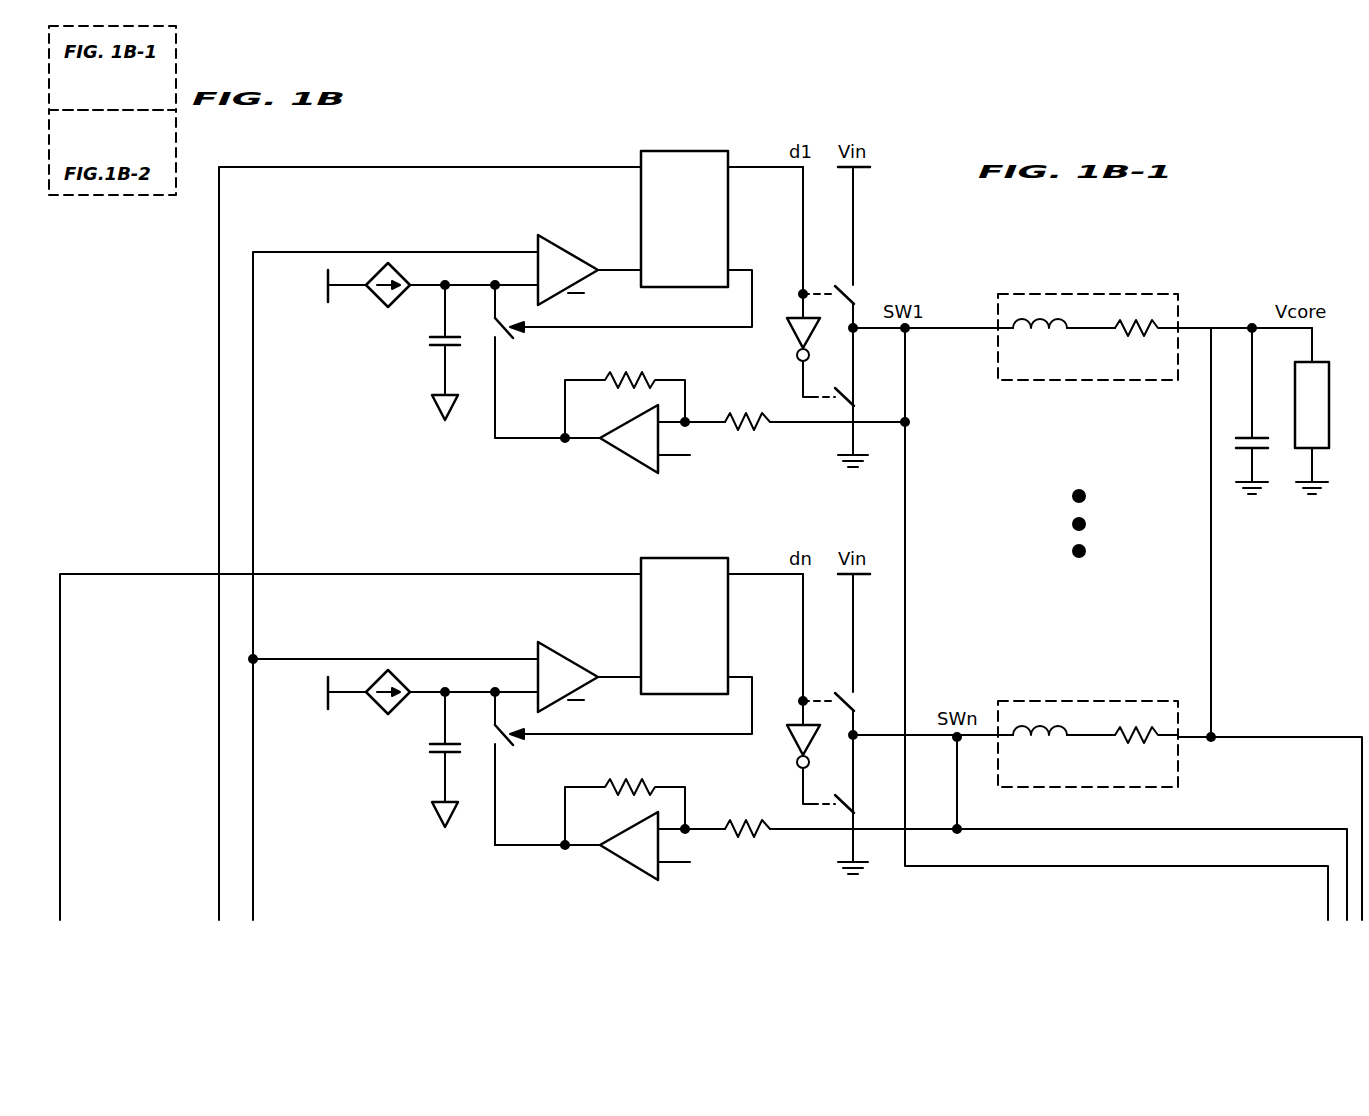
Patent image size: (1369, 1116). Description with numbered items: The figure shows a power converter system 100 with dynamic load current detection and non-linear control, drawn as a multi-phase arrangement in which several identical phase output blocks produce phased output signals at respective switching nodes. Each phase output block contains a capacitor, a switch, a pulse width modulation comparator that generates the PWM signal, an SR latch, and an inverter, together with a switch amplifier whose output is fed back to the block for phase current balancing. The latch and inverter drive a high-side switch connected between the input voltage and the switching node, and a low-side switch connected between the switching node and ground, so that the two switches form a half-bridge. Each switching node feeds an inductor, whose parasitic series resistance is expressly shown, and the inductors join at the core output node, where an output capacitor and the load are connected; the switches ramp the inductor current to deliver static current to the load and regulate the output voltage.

The power converter system 100 is at (1234, 226).